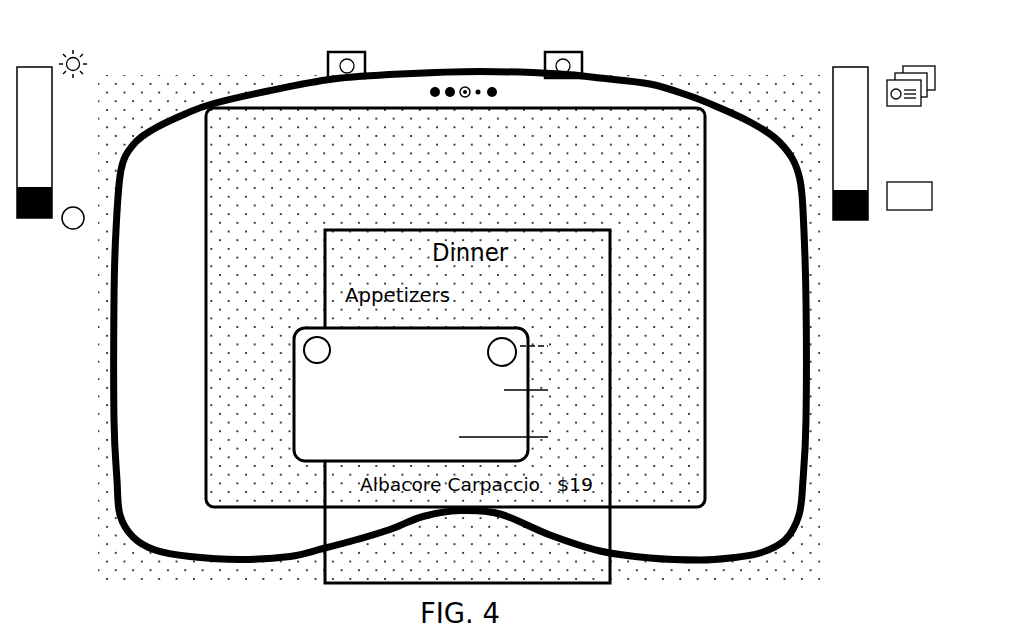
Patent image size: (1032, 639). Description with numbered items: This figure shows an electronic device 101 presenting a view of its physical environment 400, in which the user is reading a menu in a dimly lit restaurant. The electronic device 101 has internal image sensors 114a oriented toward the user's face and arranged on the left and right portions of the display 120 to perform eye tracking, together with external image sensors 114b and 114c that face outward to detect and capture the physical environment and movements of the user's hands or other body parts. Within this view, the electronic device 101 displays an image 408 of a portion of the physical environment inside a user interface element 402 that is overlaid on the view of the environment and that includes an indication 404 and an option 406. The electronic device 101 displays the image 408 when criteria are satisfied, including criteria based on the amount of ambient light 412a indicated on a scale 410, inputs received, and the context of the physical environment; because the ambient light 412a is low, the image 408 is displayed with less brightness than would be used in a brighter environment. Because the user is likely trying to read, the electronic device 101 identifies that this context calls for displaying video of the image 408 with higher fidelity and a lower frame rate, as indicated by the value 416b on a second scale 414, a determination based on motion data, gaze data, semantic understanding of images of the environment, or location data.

The electronic device 101 is at (668, 88).
The internal image sensors 114a is at (511, 84).
The external image sensor 114b is at (366, 68).
The external image sensor 114c is at (583, 68).
The display 120 is at (695, 516).
The physical environment 400 is at (486, 151).
The user interface element 402 is at (460, 328).
The indication 404 is at (317, 336).
The option 406 is at (505, 337).
The image 408 is at (292, 412).
The scale 410 is at (61, 172).
The amount of ambient light 412a is at (37, 187).
The scale 414 is at (884, 171).
The value 416b is at (857, 190).